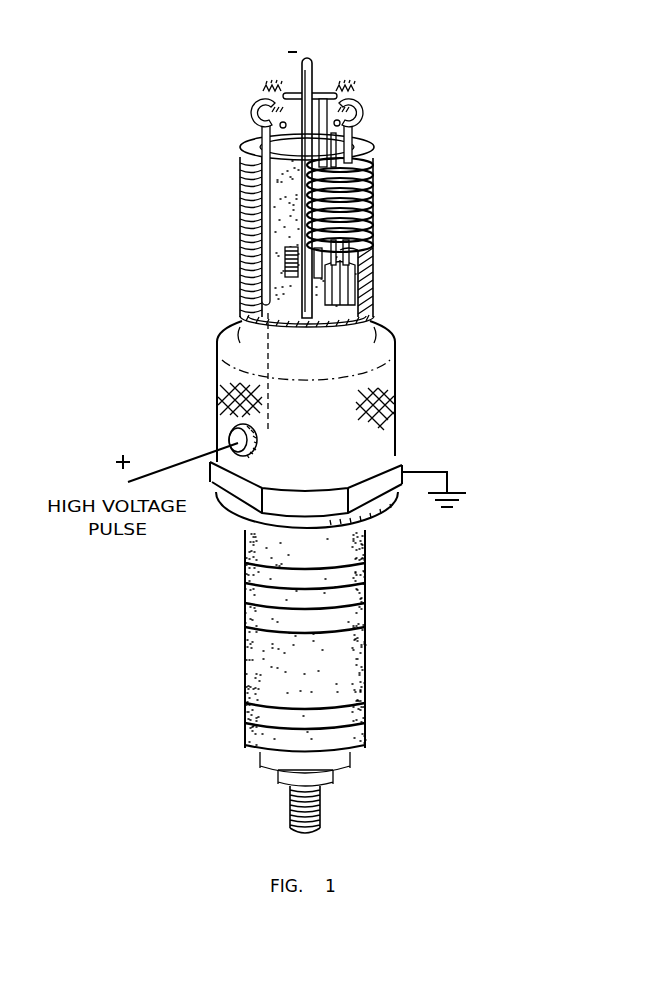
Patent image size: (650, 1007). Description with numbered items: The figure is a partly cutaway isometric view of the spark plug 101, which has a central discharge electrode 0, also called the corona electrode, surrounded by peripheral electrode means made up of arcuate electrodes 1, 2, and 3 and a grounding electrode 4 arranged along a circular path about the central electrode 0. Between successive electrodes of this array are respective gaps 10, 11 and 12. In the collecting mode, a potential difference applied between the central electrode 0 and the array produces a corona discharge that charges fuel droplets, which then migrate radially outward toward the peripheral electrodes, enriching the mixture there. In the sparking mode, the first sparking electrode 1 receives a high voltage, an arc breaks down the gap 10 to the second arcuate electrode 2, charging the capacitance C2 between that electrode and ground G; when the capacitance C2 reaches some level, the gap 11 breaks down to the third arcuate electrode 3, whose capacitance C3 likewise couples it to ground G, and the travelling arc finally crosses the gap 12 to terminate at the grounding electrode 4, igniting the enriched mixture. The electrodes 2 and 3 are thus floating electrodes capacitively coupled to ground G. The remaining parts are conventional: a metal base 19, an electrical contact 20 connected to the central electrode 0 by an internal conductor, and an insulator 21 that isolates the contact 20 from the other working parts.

The spark plug 101 is at (350, 416).
The central discharge electrode 0 is at (312, 68).
The first sparking electrode 1 is at (258, 102).
The second arcuate electrode 2 is at (326, 96).
The third arcuate electrode 3 is at (365, 116).
The grounding electrode 4 is at (375, 172).
The gap 10 is at (273, 80).
The gap 11 is at (356, 88).
The gap 12 is at (373, 145).
The metal base 19 is at (380, 378).
The electrical contact 20 is at (330, 813).
The insulator 21 is at (368, 608).
The capacitance C2 is at (286, 260).
The capacitance C3 is at (367, 264).
The ground G is at (458, 488).